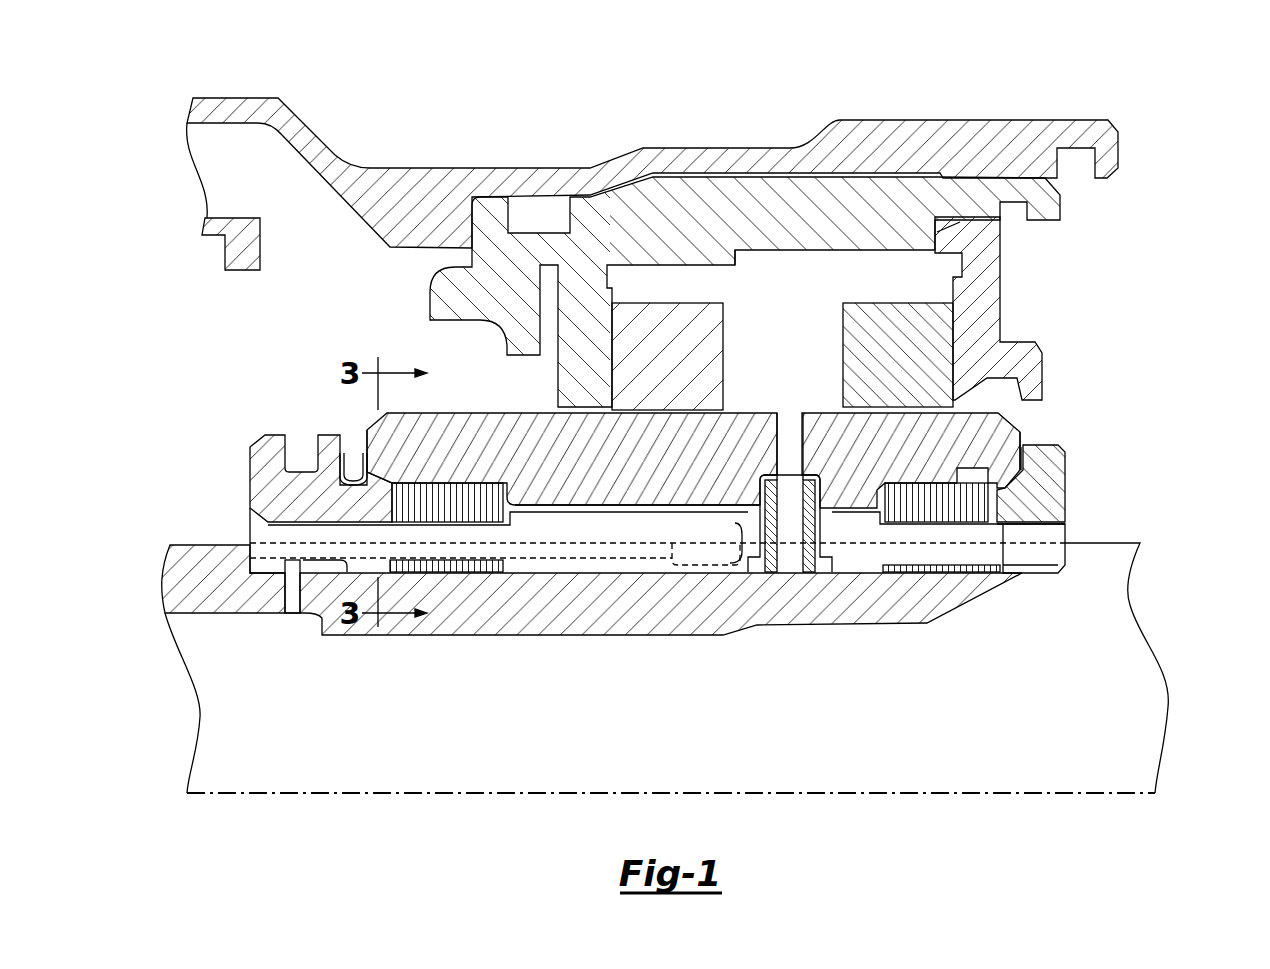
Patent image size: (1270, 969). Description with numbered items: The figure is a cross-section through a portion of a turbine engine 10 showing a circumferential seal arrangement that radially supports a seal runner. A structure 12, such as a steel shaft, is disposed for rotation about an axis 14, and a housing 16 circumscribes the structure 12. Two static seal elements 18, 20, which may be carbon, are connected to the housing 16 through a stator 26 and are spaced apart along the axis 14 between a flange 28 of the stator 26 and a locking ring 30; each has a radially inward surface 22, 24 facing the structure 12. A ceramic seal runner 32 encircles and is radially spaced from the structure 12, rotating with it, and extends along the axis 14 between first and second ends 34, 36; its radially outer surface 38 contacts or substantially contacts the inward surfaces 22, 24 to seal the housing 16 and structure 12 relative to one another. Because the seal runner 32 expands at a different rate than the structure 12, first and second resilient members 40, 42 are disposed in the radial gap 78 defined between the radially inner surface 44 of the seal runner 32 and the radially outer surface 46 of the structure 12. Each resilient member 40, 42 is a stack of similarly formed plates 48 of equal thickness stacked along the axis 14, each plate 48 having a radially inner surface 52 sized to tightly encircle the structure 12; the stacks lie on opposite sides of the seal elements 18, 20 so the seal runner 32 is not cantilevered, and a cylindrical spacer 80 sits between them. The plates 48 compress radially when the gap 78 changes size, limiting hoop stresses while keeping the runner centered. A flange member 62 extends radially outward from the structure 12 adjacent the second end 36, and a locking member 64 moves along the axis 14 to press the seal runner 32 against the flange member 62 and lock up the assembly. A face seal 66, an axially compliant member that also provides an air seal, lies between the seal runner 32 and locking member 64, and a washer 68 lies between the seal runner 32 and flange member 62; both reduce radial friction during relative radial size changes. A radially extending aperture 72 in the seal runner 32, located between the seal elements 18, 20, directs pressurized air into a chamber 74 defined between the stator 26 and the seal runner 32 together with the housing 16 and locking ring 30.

The turbine engine 10 is at (1165, 105).
The structure 12 is at (868, 600).
The axis 14 is at (1055, 793).
The housing 16 is at (936, 147).
The seal element 18 is at (657, 369).
The seal element 20 is at (889, 369).
The radially inward surface 22 is at (713, 420).
The radially inward surface 24 is at (858, 426).
The stator 26 is at (667, 228).
The flange 28 is at (587, 318).
The locking ring 30 is at (975, 272).
The seal runner 32 is at (657, 472).
The first end 34 is at (363, 415).
The second end 36 is at (1050, 416).
The radially outer surface 38 is at (435, 413).
The first resilient member 40 is at (447, 603).
The second resilient member 42 is at (960, 583).
The radially inner surface 44 is at (541, 505).
The radially outer surface 46 is at (610, 573).
The plates 48 is at (467, 495).
The radially inner surface 52 is at (473, 575).
The flange member 62 is at (1047, 477).
The locking member 64 is at (270, 455).
The face seal 66 is at (350, 443).
The washer 68 is at (1067, 457).
The aperture 72 is at (778, 450).
The chamber 74 is at (763, 268).
The radial gap 78 is at (703, 510).
The cylindrical spacer 80 is at (560, 532).